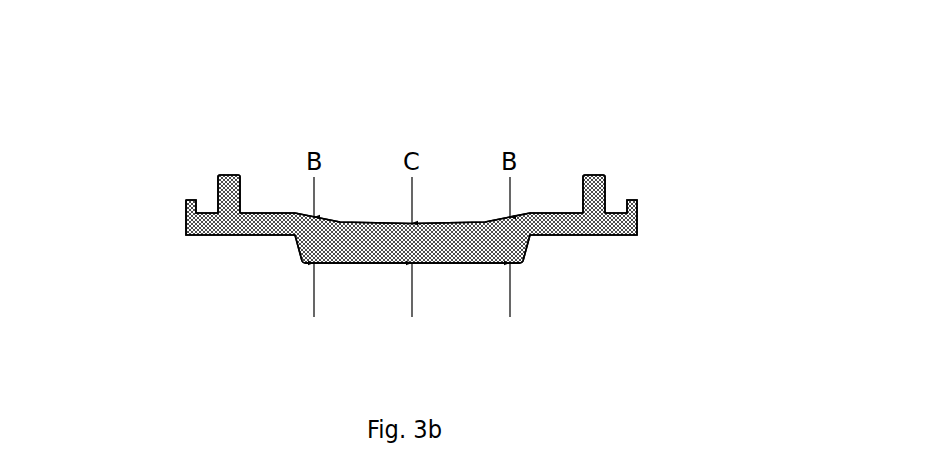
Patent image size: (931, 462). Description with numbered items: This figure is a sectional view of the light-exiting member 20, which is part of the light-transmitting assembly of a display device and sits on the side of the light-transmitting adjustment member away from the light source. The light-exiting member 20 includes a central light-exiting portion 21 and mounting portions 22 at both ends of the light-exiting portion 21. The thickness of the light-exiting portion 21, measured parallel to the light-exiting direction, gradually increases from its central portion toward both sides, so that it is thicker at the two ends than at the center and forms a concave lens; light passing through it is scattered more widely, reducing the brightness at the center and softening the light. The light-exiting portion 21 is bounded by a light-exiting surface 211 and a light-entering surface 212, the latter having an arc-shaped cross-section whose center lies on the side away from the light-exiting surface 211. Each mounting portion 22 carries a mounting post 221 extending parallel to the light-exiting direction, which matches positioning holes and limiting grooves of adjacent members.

The light-exiting member 20 is at (150, 50).
The light-exiting portion 21 is at (527, 258).
The mounting portion 22 is at (223, 235).
The mounting post 221 is at (230, 177).
The light-exiting surface 211 is at (390, 263).
The light-entering surface 212 is at (367, 223).